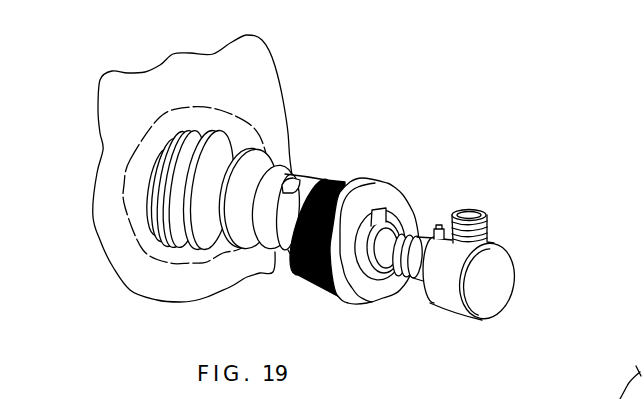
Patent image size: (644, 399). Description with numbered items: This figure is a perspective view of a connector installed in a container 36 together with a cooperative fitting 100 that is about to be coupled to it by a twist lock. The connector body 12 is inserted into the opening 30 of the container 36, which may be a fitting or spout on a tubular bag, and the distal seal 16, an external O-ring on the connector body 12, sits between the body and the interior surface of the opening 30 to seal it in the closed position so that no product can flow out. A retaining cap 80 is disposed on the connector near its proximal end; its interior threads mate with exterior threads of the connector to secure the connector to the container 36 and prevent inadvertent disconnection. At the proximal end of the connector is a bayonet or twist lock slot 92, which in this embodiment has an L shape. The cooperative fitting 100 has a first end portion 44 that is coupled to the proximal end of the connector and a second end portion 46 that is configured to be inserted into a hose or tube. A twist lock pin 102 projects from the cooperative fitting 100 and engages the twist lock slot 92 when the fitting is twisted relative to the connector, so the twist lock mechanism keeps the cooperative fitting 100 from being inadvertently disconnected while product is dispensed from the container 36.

The connector body 12 is at (278, 232).
The distal seal 16 is at (287, 160).
The opening 30 is at (152, 217).
The container 36 is at (263, 48).
The first end portion 44 is at (412, 281).
The second end portion 46 is at (487, 222).
The retaining cap 80 is at (340, 180).
The twist lock slot 92 is at (381, 210).
The cooperative fitting 100 is at (516, 261).
The twist lock pin 102 is at (438, 224).